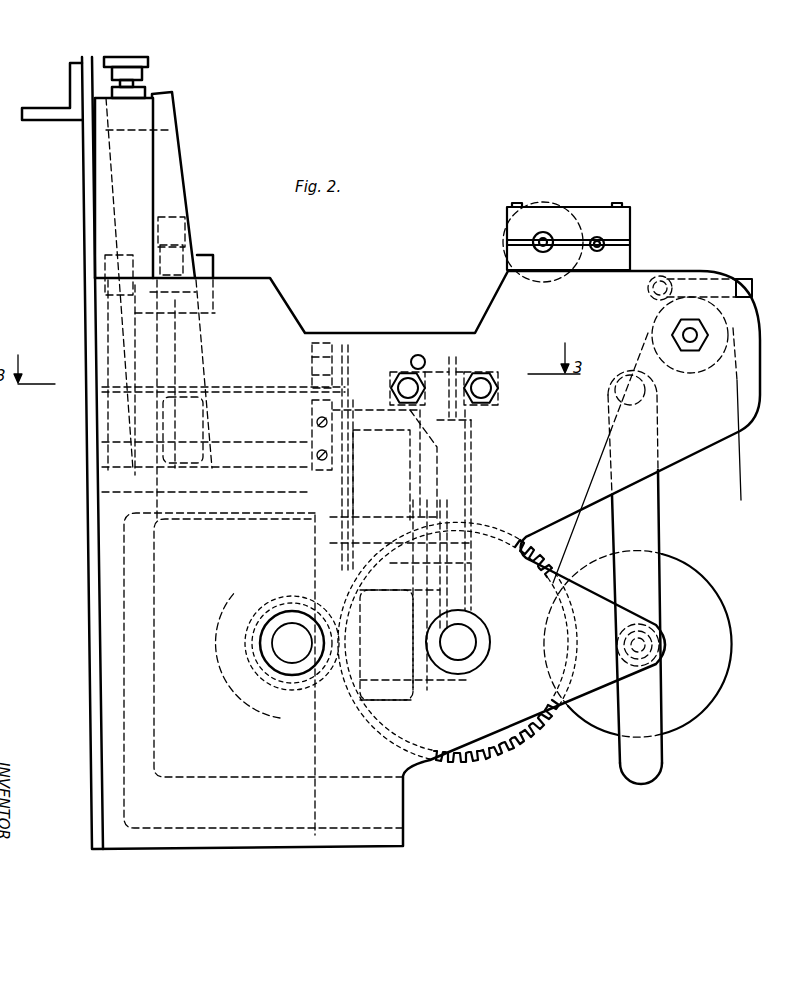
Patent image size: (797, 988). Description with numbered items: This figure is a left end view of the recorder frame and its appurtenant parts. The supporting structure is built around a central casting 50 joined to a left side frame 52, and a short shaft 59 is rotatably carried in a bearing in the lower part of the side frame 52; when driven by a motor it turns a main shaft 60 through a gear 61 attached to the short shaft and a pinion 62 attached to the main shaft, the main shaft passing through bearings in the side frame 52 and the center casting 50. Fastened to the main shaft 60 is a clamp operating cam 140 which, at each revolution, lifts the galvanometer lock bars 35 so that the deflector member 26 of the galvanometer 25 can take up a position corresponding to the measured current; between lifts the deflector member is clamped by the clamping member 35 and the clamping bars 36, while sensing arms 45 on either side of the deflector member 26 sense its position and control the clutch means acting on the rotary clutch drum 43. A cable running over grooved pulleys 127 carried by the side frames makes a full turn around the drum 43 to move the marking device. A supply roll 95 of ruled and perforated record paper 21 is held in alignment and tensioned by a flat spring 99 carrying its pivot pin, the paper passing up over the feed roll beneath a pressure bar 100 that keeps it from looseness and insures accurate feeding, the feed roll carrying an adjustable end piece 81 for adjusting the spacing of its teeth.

The record strip 21 is at (741, 458).
The galvanometer 25 is at (216, 268).
The deflector member 26 is at (352, 386).
The clamping member 35 is at (320, 340).
The clamping bars 36 is at (313, 407).
The rotary clutch drum 43 is at (463, 452).
The sensing arms 45 is at (343, 404).
The central casting 50 is at (445, 560).
The left side frame 52 is at (278, 648).
The short shaft 59 is at (462, 650).
The main shaft 60 is at (292, 643).
The gear 61 is at (283, 598).
The pinion 62 is at (468, 758).
The adjustable end piece 81 is at (726, 332).
The supply roll 95 is at (733, 622).
The flat spring 99 is at (660, 769).
The pressure bar 100 is at (690, 285).
The grooved pulleys 127 is at (458, 362).
The clamp operating cam 140 is at (218, 625).